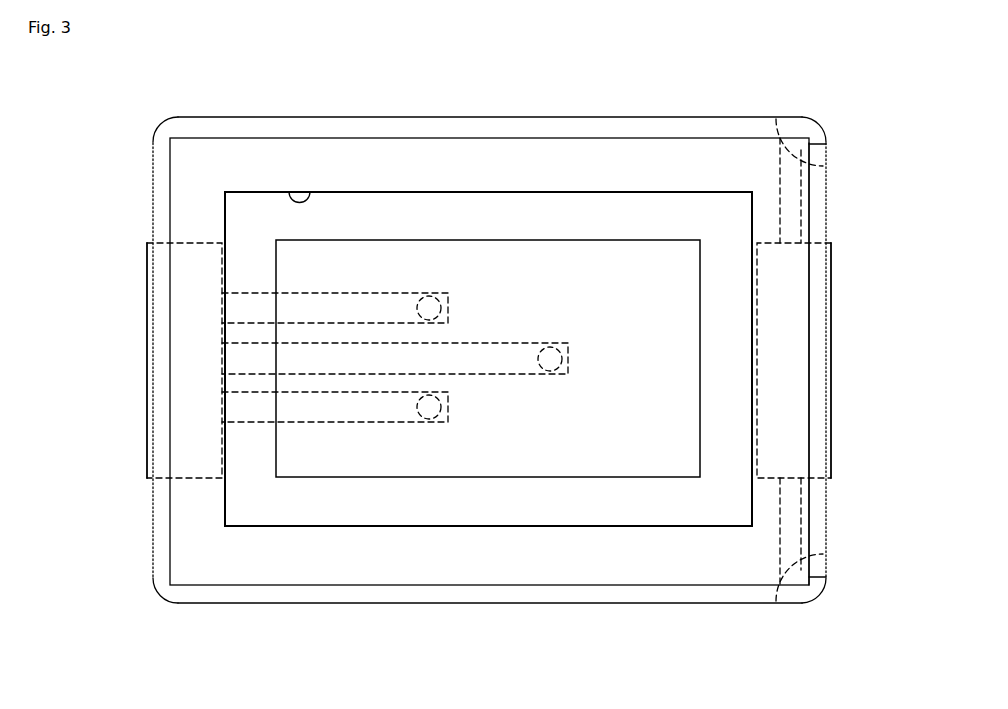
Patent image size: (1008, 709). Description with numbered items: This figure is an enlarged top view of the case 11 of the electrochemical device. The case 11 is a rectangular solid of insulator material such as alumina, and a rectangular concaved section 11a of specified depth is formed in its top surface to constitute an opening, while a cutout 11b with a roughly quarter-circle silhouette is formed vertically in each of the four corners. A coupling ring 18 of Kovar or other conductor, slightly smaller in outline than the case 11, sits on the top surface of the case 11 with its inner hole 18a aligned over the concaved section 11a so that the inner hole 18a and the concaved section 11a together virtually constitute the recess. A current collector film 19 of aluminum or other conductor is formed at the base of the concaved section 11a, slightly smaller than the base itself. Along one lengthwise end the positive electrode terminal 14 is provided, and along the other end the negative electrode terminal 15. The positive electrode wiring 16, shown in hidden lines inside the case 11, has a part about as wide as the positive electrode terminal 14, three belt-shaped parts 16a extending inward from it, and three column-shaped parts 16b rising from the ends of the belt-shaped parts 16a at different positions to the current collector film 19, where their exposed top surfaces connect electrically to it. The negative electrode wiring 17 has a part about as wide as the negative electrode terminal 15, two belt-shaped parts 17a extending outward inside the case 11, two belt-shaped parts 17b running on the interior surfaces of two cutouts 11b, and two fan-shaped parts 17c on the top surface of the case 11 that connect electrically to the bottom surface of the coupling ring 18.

The case 11 is at (480, 363).
The concaved section 11a is at (290, 134).
The cutout 11b is at (172, 128).
The positive electrode terminal 14 is at (148, 356).
The negative electrode terminal 15 is at (831, 356).
The positive electrode wiring 16 is at (334, 476).
The belt-shaped part 16a is at (343, 424).
The column-shaped part 16b is at (428, 420).
The negative electrode wiring 17 is at (833, 362).
The belt-shaped part 17a is at (800, 203).
The belt-shaped part 17b is at (812, 138).
The fan-shaped part 17c is at (822, 157).
The coupling ring 18 is at (188, 182).
The inner hole 18a is at (291, 190).
The current collector film 19 is at (488, 295).